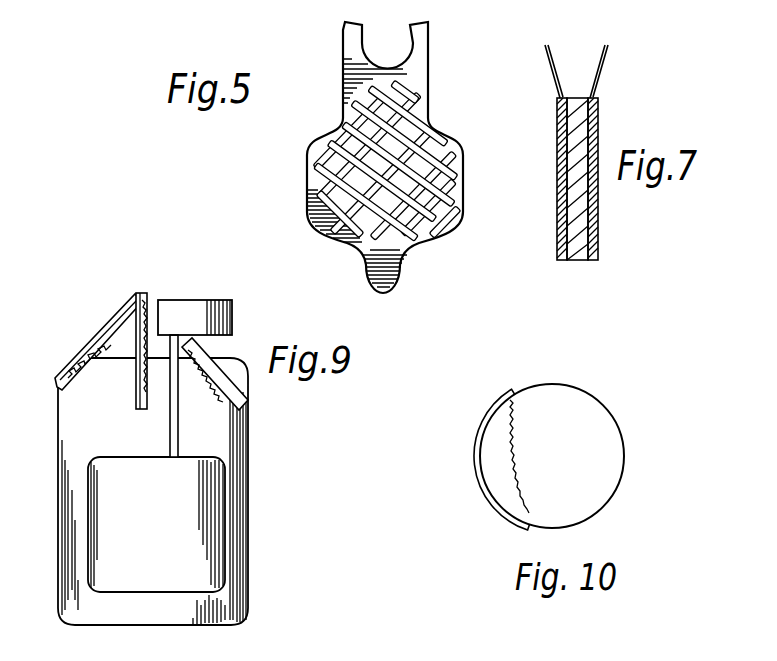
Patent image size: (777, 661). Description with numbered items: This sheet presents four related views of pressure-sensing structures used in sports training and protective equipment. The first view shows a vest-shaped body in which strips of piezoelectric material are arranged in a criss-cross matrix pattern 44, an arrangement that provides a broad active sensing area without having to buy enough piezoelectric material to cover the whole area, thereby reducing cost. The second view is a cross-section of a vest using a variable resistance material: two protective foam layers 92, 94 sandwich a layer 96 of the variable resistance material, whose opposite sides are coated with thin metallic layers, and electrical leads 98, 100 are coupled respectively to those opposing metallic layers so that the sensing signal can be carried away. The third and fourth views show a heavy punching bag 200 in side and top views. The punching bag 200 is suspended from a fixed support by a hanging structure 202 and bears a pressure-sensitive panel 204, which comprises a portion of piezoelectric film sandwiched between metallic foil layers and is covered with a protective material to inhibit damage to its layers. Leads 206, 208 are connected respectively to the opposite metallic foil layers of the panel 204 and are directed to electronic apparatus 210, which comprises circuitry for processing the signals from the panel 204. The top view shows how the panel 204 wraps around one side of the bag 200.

In FIG. 5, the criss-cross matrix pattern 44 is at (350, 103).
In FIG. 7, the protective foam layer 92 is at (557, 231).
In FIG. 7, the protective foam layer 94 is at (600, 244).
In FIG. 7, the layer of variable resistance material 96 is at (578, 260).
In FIG. 7, the electrical lead 98 is at (550, 70).
In FIG. 7, the electrical lead 100 is at (603, 72).
In FIG. 9, the heavy punching bag 200 is at (247, 574).
In FIG. 10, the heavy punching bag 200 is at (619, 486).
In FIG. 9, the hanging structure 202 is at (88, 338).
In FIG. 9, the panel 204 is at (223, 485).
In FIG. 10, the panel 204 is at (496, 512).
In FIG. 9, the lead 206 is at (178, 433).
In FIG. 9, the lead 208 is at (170, 421).
In FIG. 9, the electronic apparatus 210 is at (188, 299).